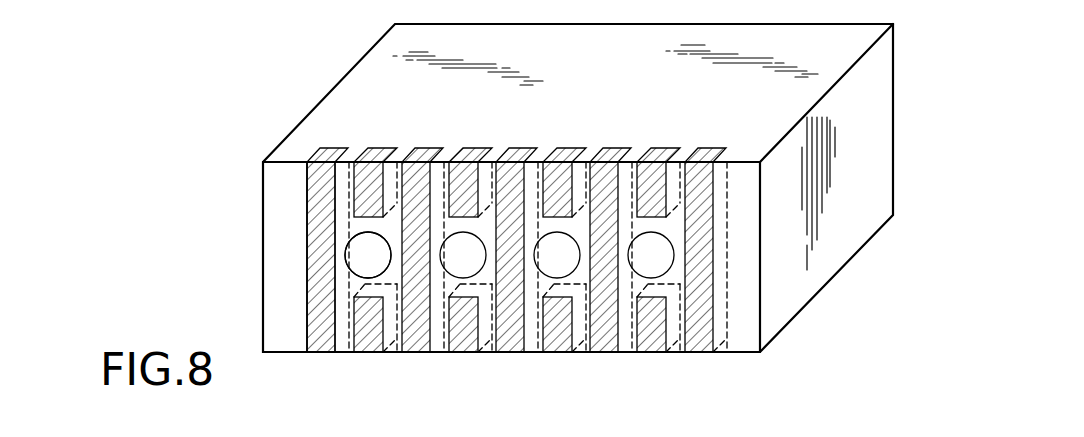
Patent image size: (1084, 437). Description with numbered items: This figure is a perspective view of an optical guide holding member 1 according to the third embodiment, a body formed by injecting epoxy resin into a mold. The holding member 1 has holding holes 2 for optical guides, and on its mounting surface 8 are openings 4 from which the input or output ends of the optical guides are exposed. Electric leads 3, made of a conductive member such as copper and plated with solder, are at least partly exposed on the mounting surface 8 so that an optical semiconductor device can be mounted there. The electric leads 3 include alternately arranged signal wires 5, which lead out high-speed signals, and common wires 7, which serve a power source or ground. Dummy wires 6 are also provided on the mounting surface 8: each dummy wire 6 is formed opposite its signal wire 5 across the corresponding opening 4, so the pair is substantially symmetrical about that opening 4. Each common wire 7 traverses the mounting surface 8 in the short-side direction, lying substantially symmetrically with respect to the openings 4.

The optical guide holding member 1 is at (375, 84).
The holding hole 2 is at (667, 261).
The electric lead 3 is at (322, 303).
The opening 4 is at (362, 268).
The signal wire 5 is at (377, 160).
The dummy wire 6 is at (370, 347).
The common wire 7 is at (337, 148).
The mounting surface 8 is at (273, 206).